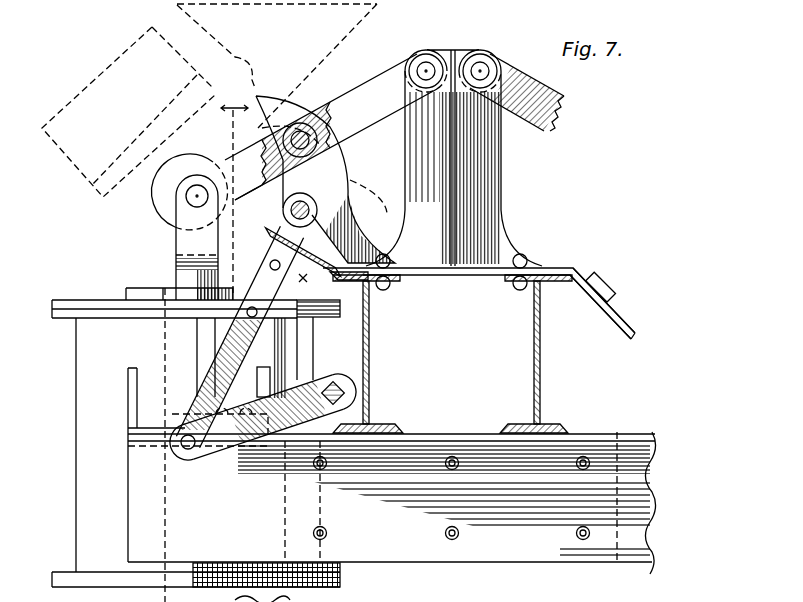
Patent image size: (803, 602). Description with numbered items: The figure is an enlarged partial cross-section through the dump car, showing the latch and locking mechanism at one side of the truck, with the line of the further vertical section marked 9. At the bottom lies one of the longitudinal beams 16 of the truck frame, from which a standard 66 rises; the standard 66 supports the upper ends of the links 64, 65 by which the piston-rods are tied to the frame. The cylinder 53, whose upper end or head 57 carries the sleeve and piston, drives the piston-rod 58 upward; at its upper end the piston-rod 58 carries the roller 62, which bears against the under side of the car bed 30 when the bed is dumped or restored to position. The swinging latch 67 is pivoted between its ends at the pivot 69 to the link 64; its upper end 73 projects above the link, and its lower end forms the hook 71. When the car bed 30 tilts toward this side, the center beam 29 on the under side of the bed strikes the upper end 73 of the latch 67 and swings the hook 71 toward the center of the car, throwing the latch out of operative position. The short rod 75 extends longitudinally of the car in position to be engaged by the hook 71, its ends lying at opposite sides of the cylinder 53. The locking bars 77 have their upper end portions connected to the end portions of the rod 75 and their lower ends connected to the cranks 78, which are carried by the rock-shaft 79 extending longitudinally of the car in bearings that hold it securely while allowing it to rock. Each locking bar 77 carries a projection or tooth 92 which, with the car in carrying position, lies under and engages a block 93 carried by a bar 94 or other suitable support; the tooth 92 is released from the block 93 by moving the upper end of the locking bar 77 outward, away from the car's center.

The car bed 30 is at (92, 97).
The beam 29 is at (332, 42).
The upper end of latch 73 is at (270, 112).
The pivot 69 is at (300, 122).
The section line 9— 9 is at (234, 97).
The link 64 is at (216, 162).
The roller 62 is at (165, 184).
The swinging latch 67 is at (278, 176).
The short rod 75 is at (283, 210).
The hook 71 is at (264, 253).
The link 65 is at (556, 93).
The standard 66 is at (496, 213).
The cylinder head 57 is at (83, 306).
The piston-rod 58 is at (185, 270).
The block 93 is at (603, 288).
The bar 94 is at (628, 325).
The tooth 92 is at (316, 320).
The locking bar 77 is at (297, 291).
The longitudinal beam 16 is at (371, 364).
The rock-shaft 79 is at (360, 391).
The crank 78 is at (283, 402).
The cylinder 53 is at (86, 400).